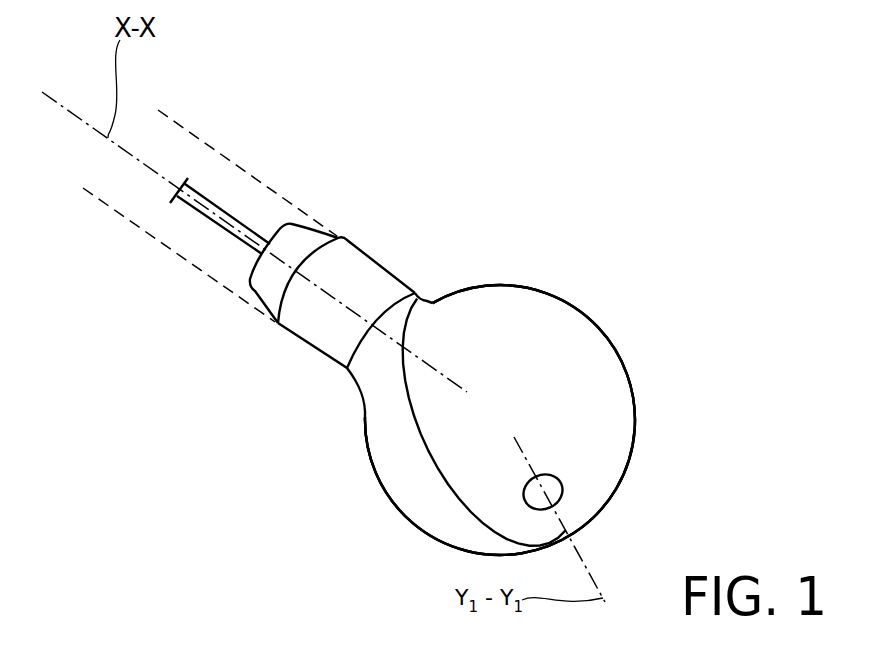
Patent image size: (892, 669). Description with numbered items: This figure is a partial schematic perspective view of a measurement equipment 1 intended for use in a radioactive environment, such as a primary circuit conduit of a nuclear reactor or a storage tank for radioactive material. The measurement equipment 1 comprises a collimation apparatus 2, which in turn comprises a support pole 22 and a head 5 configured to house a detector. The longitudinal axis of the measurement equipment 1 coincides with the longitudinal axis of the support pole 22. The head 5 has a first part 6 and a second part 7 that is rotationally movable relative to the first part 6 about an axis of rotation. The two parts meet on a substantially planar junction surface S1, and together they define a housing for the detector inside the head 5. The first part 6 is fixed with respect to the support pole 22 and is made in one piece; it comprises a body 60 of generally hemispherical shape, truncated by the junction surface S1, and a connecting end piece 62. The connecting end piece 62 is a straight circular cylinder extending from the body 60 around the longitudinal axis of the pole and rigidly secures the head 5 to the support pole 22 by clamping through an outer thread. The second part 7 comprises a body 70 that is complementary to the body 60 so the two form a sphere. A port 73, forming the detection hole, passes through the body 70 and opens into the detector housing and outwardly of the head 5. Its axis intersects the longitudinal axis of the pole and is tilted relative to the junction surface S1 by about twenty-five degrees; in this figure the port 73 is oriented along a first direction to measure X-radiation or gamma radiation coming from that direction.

The measurement equipment 1 is at (247, 125).
The collimation apparatus 2 is at (442, 275).
The head 5 is at (508, 224).
The first part 6 is at (233, 412).
The body 60 is at (403, 474).
The connecting end piece 62 is at (322, 329).
The second part 7 is at (725, 292).
The body 70 is at (567, 377).
The port 73 is at (563, 490).
The support pole 22 is at (182, 258).
The junction surface S1 is at (457, 490).